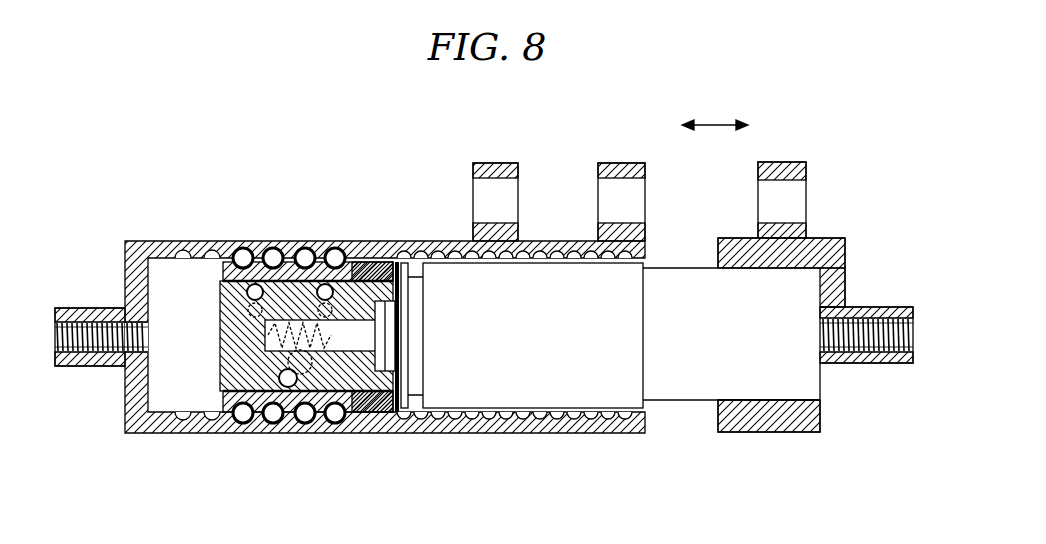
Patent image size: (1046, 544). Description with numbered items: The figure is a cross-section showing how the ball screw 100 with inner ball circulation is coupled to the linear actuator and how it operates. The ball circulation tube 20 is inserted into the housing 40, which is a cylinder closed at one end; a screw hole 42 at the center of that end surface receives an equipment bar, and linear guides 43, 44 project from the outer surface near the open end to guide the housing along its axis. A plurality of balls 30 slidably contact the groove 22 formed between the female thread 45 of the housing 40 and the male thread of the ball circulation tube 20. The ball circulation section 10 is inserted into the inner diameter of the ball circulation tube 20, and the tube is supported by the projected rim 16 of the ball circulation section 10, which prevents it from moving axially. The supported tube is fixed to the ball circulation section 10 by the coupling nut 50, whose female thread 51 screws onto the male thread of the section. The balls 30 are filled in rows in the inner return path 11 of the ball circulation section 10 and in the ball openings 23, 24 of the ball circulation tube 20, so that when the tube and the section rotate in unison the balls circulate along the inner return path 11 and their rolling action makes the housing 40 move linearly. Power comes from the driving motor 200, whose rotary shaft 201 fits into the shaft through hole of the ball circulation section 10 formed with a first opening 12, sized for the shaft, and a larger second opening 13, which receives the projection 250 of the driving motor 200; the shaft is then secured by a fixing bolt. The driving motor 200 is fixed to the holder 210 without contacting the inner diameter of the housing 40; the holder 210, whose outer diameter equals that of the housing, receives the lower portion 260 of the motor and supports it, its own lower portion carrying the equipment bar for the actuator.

The ball screw 100 is at (137, 204).
The ball circulation section 10 is at (222, 303).
The inner return path 11 is at (330, 435).
The first opening 12 is at (306, 435).
The second opening 13 is at (401, 321).
The rim 16 is at (206, 252).
The ball circulation tube 20 is at (232, 250).
The groove 22 is at (295, 240).
The ball opening 23 is at (345, 240).
The ball opening 24 is at (220, 283).
The balls 30 is at (243, 250).
The housing 40 is at (325, 240).
The screw hole 42 is at (83, 366).
The linear guide 43 is at (520, 170).
The linear guide 44 is at (626, 162).
The female thread 45 is at (280, 240).
The coupling nut 50 is at (408, 240).
The female thread 51 is at (370, 435).
The driving motor 200 is at (548, 373).
The rotary shaft 201 is at (408, 435).
The holder 210 is at (828, 250).
The projection 250 is at (399, 342).
The lower portion 260 is at (688, 383).